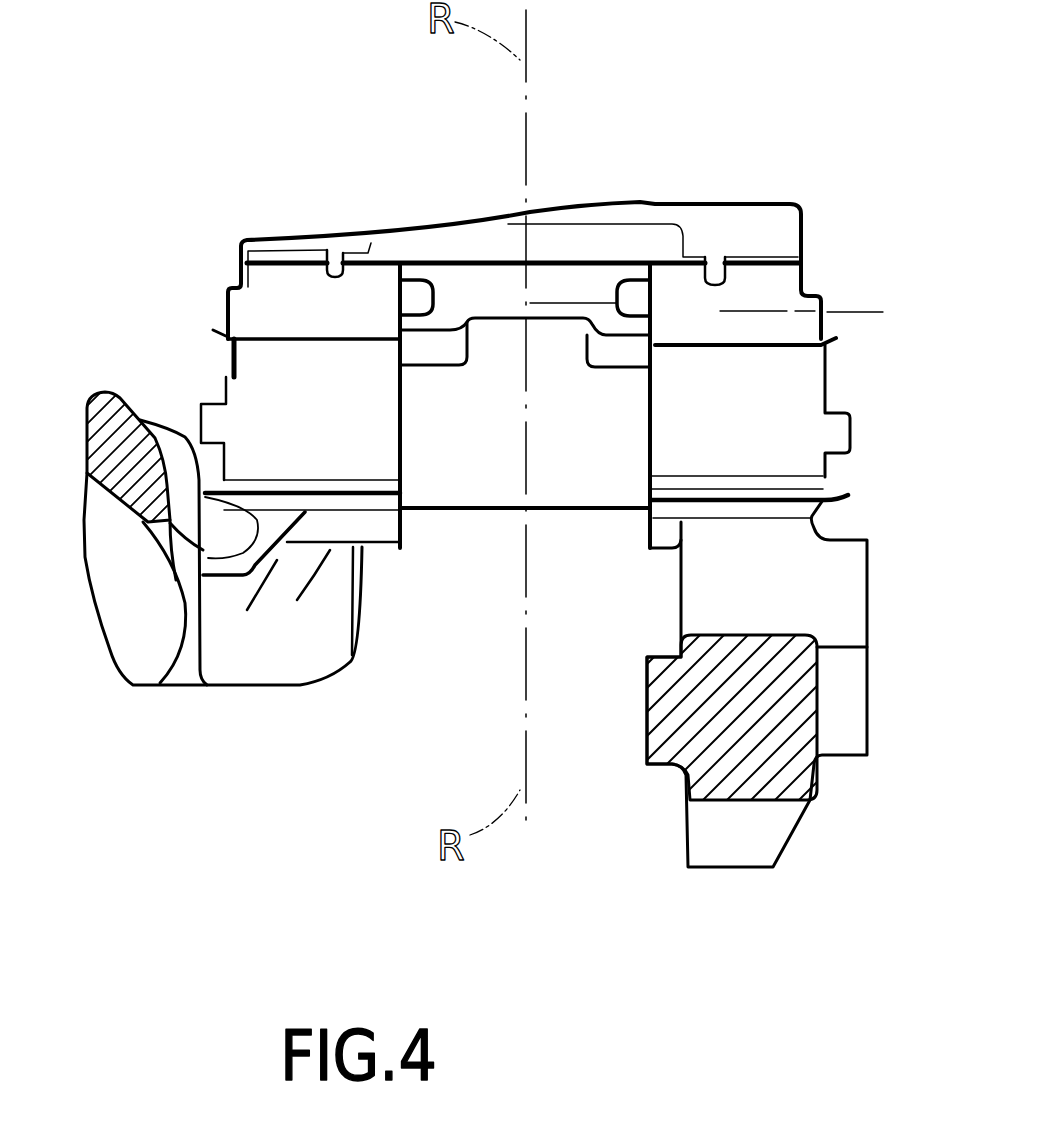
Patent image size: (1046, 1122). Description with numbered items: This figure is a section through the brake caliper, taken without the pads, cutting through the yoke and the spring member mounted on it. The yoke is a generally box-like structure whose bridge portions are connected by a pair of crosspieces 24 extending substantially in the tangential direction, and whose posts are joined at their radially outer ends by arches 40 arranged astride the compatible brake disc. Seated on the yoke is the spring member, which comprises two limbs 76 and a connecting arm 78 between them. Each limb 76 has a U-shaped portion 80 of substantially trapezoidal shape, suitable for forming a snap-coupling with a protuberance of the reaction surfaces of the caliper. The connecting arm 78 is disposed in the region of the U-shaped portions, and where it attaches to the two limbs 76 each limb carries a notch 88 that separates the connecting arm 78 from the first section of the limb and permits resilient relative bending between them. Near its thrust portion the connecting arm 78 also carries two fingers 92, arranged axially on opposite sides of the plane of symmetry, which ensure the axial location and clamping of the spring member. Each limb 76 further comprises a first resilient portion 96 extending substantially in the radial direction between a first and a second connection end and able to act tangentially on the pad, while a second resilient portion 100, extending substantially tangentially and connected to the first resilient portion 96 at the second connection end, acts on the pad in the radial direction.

The crosspiece 24 is at (787, 767).
The arch 40 is at (592, 198).
The limb 76 is at (219, 305).
The connecting arm 78 is at (490, 288).
The U-shaped portion 80 is at (295, 292).
The notch 88 is at (336, 250).
The finger 92 is at (597, 320).
The first resilient portion 96 is at (270, 397).
The second resilient portion 100 is at (630, 519).